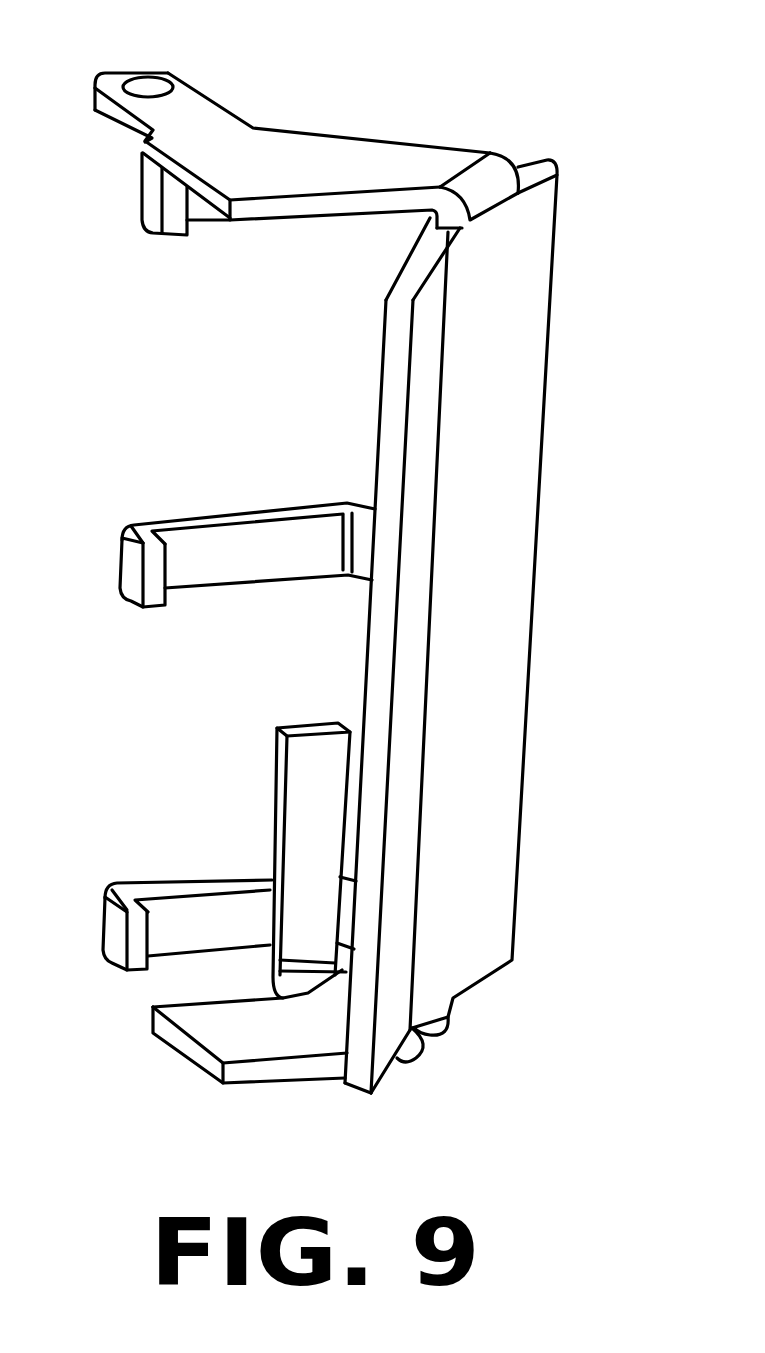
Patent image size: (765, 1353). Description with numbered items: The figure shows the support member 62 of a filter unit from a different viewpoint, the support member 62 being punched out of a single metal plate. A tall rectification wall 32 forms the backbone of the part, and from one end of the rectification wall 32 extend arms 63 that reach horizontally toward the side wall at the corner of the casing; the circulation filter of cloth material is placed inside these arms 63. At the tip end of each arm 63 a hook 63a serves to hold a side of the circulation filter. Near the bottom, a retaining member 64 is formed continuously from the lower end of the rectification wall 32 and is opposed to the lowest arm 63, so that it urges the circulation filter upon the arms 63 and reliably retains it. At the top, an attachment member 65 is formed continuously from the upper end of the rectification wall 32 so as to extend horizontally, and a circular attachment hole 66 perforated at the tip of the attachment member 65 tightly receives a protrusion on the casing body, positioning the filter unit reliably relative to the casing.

The rectification wall 32 is at (456, 596).
The support member 62 is at (548, 378).
The arm 63 is at (217, 512).
The hook 63a is at (163, 242).
The retaining member 64 is at (302, 725).
The attachment member 65 is at (306, 114).
The attachment hole 66 is at (142, 76).